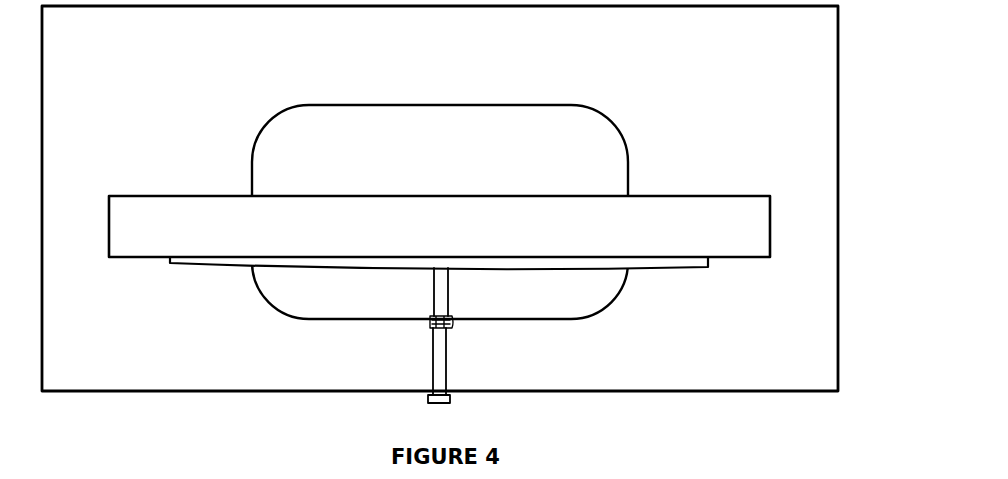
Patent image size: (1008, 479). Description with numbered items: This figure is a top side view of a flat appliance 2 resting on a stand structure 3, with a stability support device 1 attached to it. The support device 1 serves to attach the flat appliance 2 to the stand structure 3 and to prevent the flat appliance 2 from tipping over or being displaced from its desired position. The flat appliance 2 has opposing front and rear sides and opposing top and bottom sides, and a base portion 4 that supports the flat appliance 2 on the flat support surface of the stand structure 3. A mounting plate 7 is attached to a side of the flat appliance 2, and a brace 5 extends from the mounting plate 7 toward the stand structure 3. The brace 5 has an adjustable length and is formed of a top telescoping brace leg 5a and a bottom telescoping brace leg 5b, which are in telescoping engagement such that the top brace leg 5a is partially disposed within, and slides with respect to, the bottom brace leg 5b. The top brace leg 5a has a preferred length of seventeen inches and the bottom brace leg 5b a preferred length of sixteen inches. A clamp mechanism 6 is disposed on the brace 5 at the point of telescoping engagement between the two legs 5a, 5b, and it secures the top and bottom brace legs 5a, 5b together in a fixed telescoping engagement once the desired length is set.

The support device 1 is at (297, 375).
The flat appliance 2 is at (738, 193).
The stand structure 3 is at (839, 22).
The base portion 4 is at (609, 121).
The brace 5 is at (456, 362).
The top telescoping brace leg 5a is at (432, 292).
The bottom telescoping brace leg 5b is at (432, 352).
The clamp mechanism 6 is at (452, 323).
The mounting plate 7 is at (650, 268).